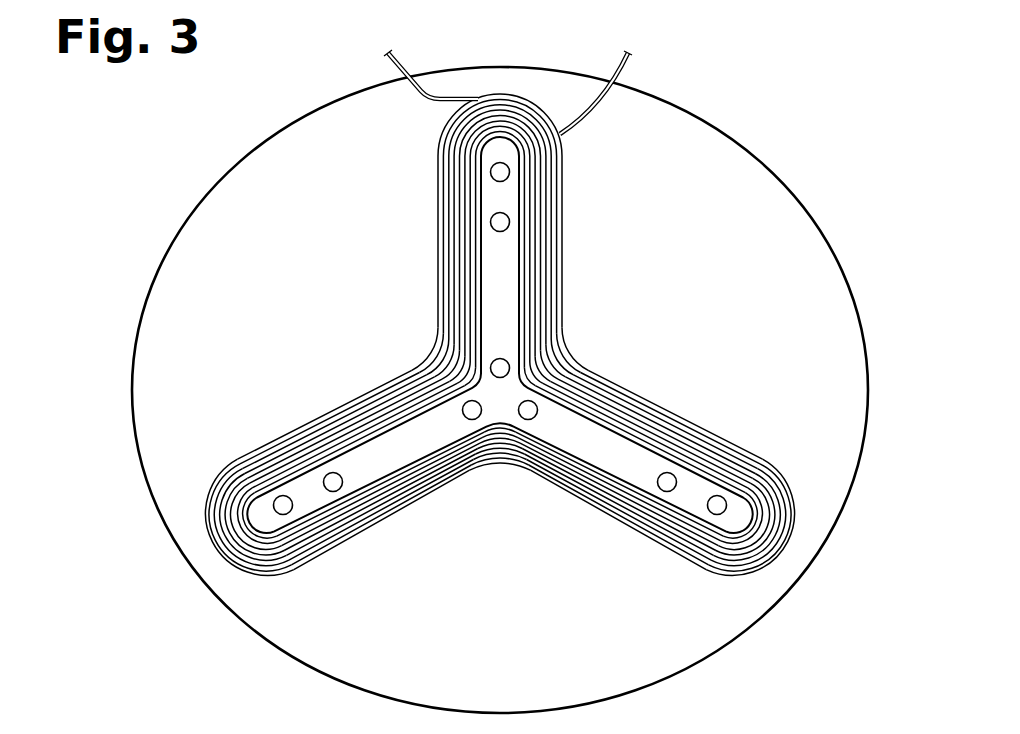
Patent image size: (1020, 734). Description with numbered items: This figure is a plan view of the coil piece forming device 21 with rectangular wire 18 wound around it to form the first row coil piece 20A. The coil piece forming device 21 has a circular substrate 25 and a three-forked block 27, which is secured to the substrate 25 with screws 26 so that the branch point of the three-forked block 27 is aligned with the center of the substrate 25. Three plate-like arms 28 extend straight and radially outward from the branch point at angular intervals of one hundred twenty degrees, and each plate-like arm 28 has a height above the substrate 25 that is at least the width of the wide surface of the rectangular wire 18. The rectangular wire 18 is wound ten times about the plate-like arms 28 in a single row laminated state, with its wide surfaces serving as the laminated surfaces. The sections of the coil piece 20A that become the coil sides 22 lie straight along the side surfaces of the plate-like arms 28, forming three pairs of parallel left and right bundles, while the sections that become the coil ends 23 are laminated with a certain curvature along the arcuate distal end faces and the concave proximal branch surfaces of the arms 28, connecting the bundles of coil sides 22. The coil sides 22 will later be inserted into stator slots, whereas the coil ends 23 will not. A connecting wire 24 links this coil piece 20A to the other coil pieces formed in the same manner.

The rectangular wire 18 is at (702, 533).
The first row coil piece 20A is at (563, 243).
The coil piece forming device 21 is at (779, 156).
The coil sides 22 is at (390, 410).
The coil ends 23 is at (522, 103).
The connecting wire 24 is at (420, 97).
The circular substrate 25 is at (846, 285).
The screws 26 is at (490, 220).
The three-forked block 27 is at (365, 465).
The plate-like arms 28 is at (497, 266).